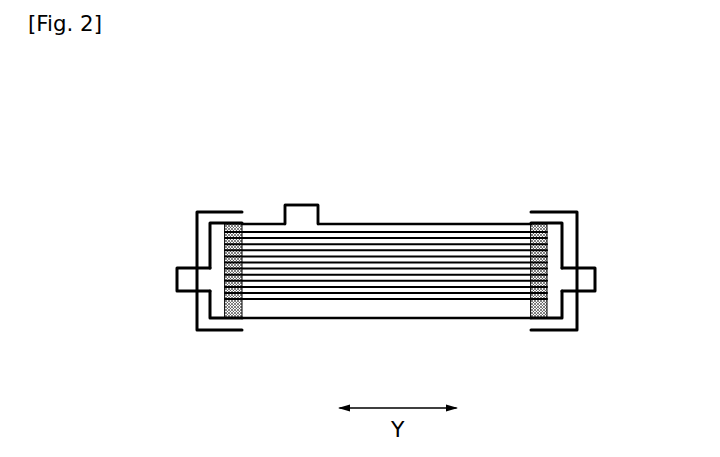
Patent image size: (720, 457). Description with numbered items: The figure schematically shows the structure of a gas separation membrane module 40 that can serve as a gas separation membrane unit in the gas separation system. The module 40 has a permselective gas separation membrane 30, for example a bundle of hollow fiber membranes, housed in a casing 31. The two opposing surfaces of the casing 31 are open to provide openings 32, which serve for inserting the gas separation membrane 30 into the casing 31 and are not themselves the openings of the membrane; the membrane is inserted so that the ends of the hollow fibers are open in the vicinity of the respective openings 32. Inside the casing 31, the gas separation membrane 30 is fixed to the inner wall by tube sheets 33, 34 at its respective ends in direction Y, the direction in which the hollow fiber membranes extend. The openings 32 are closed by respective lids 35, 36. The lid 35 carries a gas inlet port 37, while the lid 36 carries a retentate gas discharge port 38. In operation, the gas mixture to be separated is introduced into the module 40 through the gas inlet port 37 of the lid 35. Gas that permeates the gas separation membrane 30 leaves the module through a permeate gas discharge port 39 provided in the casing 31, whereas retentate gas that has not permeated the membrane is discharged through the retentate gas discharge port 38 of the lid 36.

The gas separation membrane module 40 is at (448, 132).
The gas separation membrane 30 is at (438, 303).
The casing 31 is at (370, 319).
The openings 32 is at (213, 287).
The tube sheet 33 is at (243, 307).
The tube sheet 34 is at (531, 312).
The lid 35 is at (210, 212).
The lid 36 is at (553, 212).
The gas inlet port 37 is at (165, 302).
The retentate gas discharge port 38 is at (603, 260).
The permeate gas discharge port 39 is at (324, 197).